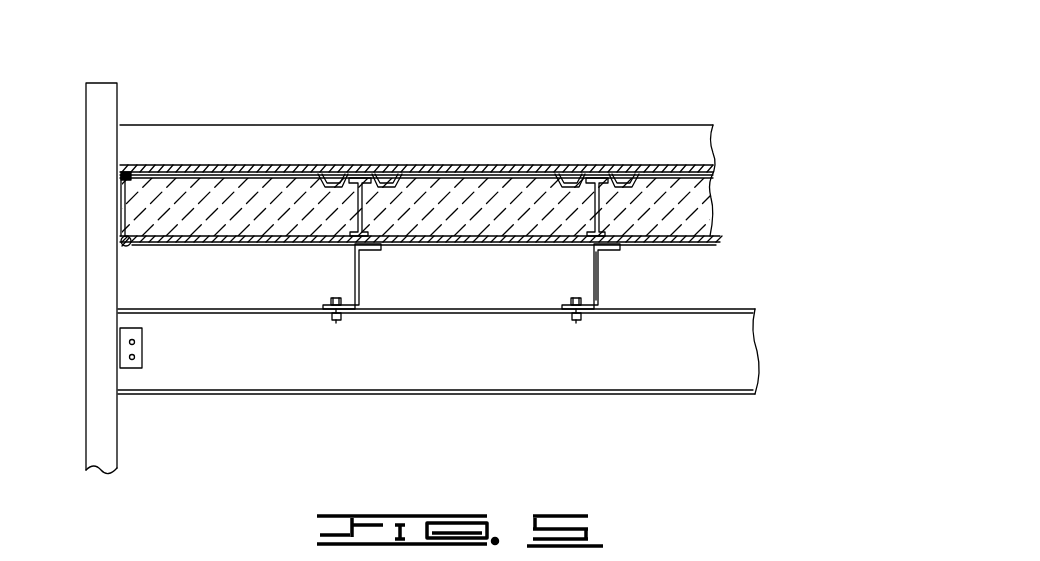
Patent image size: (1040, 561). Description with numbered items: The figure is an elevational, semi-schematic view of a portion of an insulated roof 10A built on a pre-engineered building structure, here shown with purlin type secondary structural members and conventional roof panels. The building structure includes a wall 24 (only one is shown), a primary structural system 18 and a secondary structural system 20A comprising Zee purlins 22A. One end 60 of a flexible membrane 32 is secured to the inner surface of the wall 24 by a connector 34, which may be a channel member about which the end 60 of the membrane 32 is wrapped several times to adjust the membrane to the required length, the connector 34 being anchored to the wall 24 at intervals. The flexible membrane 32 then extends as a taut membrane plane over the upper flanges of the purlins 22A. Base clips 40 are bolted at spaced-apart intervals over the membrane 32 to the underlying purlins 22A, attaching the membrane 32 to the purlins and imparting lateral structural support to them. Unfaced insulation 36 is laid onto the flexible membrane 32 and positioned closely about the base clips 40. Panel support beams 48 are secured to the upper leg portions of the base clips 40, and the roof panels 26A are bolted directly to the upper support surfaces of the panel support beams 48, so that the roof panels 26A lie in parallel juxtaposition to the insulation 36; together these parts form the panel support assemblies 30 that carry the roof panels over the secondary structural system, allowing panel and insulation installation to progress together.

The roof 10A is at (167, 114).
The primary structural system 18 is at (373, 367).
The secondary structural system 20A is at (608, 292).
The Zee purlin 22A is at (355, 278).
The wall 24 is at (85, 252).
The roof panel 26A is at (588, 140).
The panel support assembly 30 is at (364, 206).
The flexible membrane 32 is at (710, 240).
The connector 34 is at (134, 250).
The unfaced insulation 36 is at (693, 197).
The base clip 40 is at (342, 236).
The panel support beam 48 is at (372, 177).
The end of flexible membrane 60 is at (230, 243).